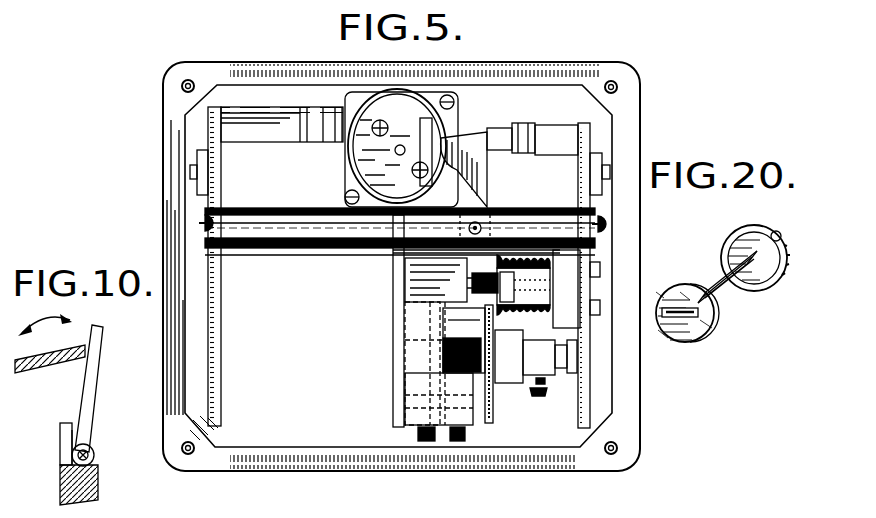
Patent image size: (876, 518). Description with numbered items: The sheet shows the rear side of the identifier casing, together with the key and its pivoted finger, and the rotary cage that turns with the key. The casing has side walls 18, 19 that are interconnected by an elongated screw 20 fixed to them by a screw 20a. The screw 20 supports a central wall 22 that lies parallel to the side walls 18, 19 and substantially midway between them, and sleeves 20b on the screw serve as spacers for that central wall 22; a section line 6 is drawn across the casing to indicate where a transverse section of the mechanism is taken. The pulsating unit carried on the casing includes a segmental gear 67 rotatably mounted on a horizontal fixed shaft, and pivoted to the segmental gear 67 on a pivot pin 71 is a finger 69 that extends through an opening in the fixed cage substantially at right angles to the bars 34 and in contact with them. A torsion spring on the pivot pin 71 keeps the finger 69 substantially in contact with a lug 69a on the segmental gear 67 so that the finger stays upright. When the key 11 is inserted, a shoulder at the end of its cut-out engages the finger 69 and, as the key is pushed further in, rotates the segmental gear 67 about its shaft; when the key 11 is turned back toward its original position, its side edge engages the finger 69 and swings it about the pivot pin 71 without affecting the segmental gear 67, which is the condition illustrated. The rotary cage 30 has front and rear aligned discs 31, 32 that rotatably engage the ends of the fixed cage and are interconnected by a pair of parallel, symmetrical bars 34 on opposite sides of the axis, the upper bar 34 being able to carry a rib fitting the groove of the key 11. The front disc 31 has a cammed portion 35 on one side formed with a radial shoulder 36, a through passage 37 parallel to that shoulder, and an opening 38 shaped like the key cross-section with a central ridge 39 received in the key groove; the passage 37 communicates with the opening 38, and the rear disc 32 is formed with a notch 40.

In FIG. 5, the section line 6- 6 is at (505, 497).
In FIG. 5, the side wall 18 is at (587, 398).
In FIG. 5, the side wall 19 is at (214, 388).
In FIG. 5, the elongated screw 20 is at (603, 222).
In FIG. 5, the screw 20a is at (202, 222).
In FIG. 5, the sleeve 20b is at (325, 228).
In FIG. 5, the central wall 22 is at (395, 338).
In FIG. 10, the key 11 is at (31, 372).
In FIG. 10, the finger 69 is at (90, 382).
In FIG. 10, the lug 69a is at (68, 442).
In FIG. 10, the pivot pin 71 is at (93, 447).
In FIG. 10, the segmental gear 67 is at (98, 480).
In FIG. 20, the rotary cage 30 is at (718, 290).
In FIG. 20, the front disc 31 is at (660, 296).
In FIG. 20, the rear disc 32 is at (787, 272).
In FIG. 20, the bar 34 is at (716, 283).
In FIG. 20, the cammed portion 35 is at (708, 330).
In FIG. 20, the radial shoulder 36 is at (689, 342).
In FIG. 20, the through passage 37 is at (665, 340).
In FIG. 20, the key opening 38 is at (699, 313).
In FIG. 20, the central ridge 39 is at (688, 300).
In FIG. 20, the notch 40 is at (779, 233).